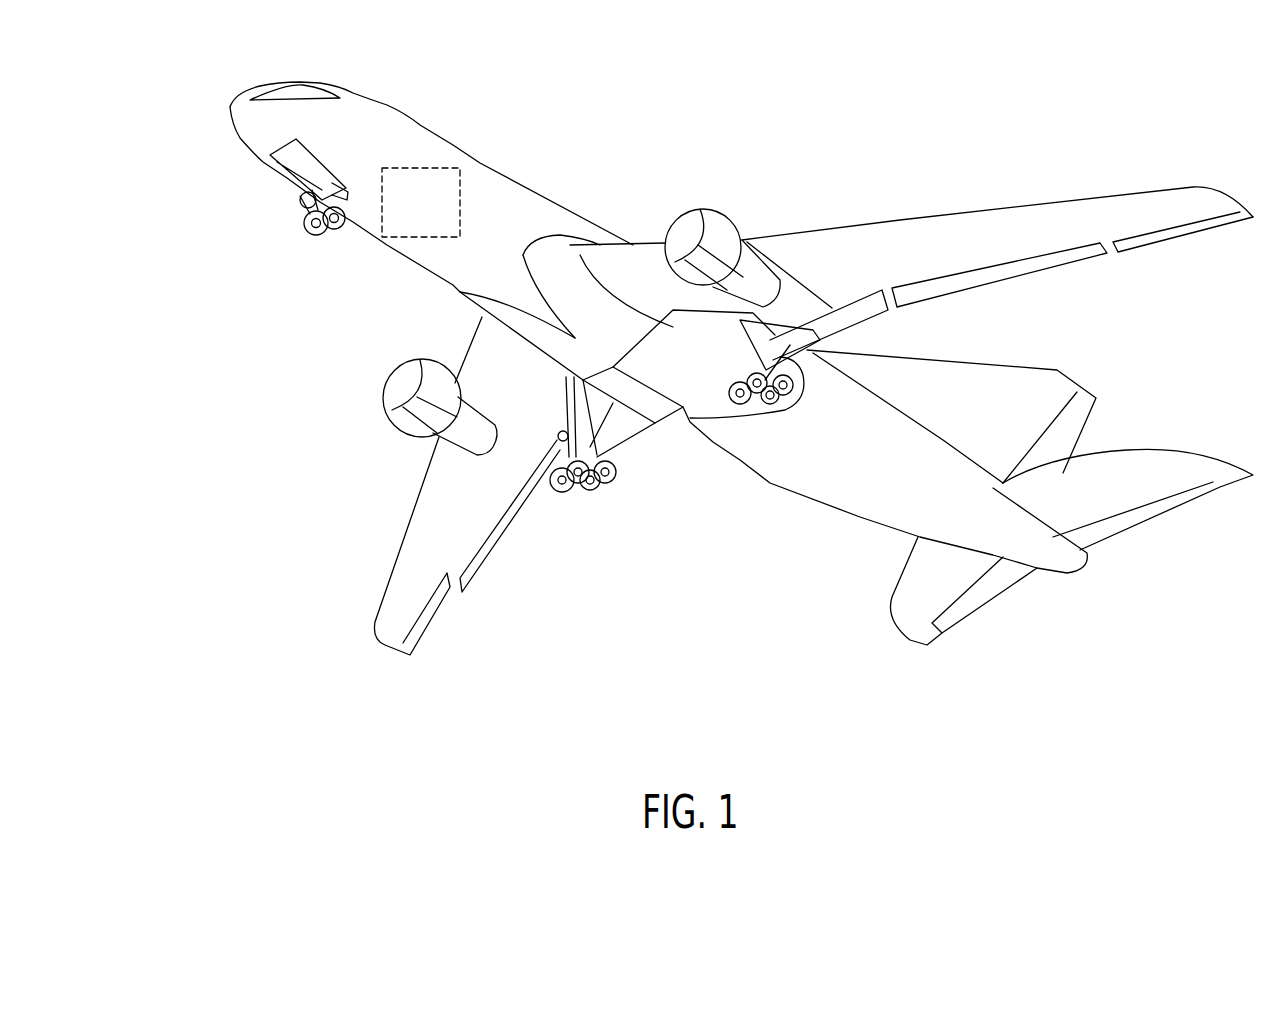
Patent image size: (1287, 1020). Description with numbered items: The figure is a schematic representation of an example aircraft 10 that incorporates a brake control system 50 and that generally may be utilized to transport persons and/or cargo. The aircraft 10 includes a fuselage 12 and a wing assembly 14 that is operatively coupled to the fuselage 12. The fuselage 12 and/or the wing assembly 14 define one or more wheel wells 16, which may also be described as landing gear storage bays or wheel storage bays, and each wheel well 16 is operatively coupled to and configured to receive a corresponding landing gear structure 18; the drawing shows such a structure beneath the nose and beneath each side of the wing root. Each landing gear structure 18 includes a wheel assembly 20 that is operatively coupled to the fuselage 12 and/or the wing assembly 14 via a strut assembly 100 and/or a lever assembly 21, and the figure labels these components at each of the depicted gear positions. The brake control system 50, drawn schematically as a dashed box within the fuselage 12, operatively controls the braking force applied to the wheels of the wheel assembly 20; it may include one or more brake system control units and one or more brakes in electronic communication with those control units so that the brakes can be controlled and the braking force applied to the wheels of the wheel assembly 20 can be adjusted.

The aircraft 10 is at (700, 348).
The fuselage 12 is at (427, 123).
The wing assembly 14 is at (903, 217).
The wheel well 16 is at (287, 168).
The landing gear structure 18 is at (571, 401).
The wheel assembly 20 is at (331, 237).
The lever assembly 21 is at (303, 260).
The brake control system 50 is at (442, 163).
The strut assembly 100 is at (534, 376).